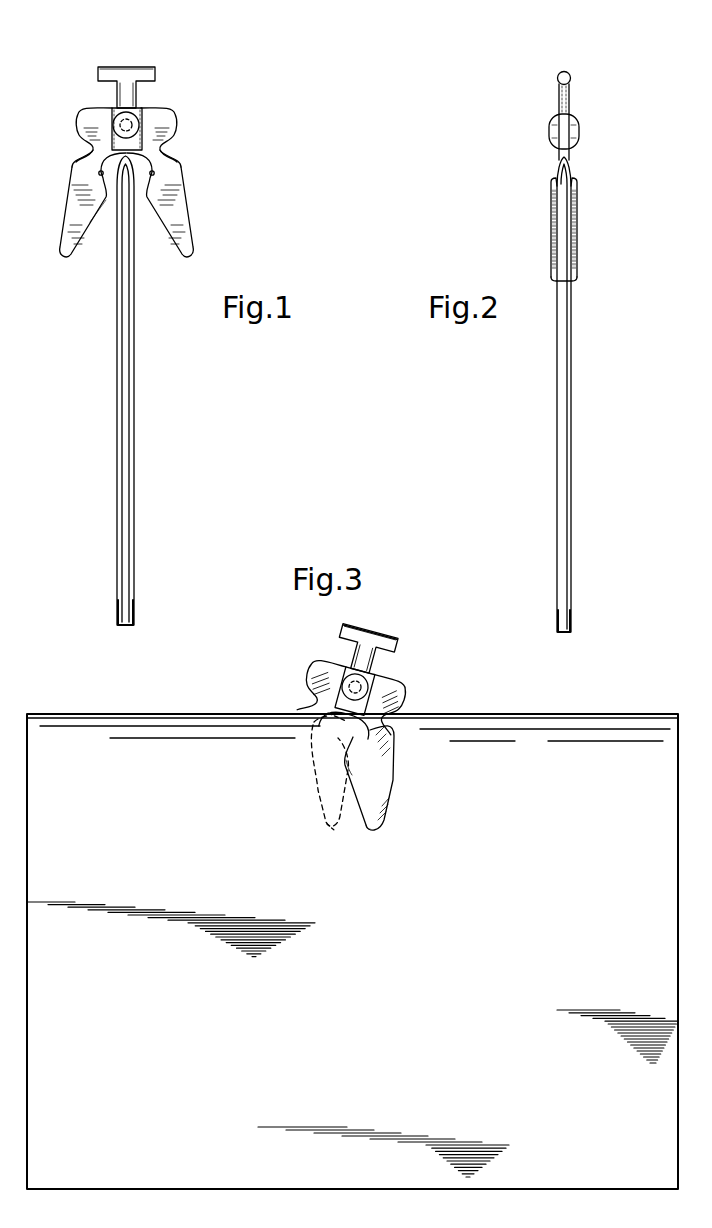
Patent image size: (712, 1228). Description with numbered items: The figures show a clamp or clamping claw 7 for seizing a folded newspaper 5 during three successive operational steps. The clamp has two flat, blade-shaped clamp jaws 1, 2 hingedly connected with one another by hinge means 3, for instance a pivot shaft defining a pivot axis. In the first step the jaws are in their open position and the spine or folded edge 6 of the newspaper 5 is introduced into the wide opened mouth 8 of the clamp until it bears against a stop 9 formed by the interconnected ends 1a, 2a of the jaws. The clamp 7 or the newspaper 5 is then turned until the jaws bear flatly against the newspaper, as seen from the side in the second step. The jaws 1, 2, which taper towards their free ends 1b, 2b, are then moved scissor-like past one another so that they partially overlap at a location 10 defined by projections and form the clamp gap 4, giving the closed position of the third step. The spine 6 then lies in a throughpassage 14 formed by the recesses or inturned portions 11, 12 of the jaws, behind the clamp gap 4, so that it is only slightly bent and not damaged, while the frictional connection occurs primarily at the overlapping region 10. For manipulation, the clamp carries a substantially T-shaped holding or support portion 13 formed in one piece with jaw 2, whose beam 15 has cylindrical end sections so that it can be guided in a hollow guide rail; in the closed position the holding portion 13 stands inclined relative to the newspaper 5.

In FIG. 1, the clamp jaw 1 is at (62, 242).
In FIG. 2, the clamp jaw 1 is at (553, 247).
In FIG. 3, the clamp jaw 1 is at (325, 806).
In FIG. 1, the interconnected end of clamp jaw 1a is at (97, 147).
In FIG. 3, the free end of clamp jaw 1b is at (326, 836).
In FIG. 1, the clamp jaw 2 is at (180, 238).
In FIG. 2, the clamp jaw 2 is at (577, 242).
In FIG. 3, the clamp jaw 2 is at (385, 782).
In FIG. 1, the interconnected end of clamp jaw 2a is at (150, 128).
In FIG. 3, the free end of clamp jaw 2b is at (376, 826).
In FIG. 1, the hinge means 3 is at (129, 123).
In FIG. 2, the hinge means 3 is at (580, 132).
In FIG. 2, the clamp gap 4 is at (565, 220).
In FIG. 3, the clamp gap 4 is at (366, 727).
In FIG. 1, the newspaper 5 is at (133, 362).
In FIG. 2, the newspaper 5 is at (570, 372).
In FIG. 3, the newspaper 5 is at (532, 738).
In FIG. 1, the spine or folded edge 6 is at (163, 152).
In FIG. 1, the clamp or clamping claw 7 is at (70, 137).
In FIG. 3, the clamp or clamping claw 7 is at (318, 671).
In FIG. 1, the mouth of the clamp 8 is at (104, 241).
In FIG. 1, the stop 9 is at (110, 120).
In FIG. 3, the overlapping region 10 is at (350, 765).
In FIG. 1, the recess or inturned portion 11 is at (99, 173).
In FIG. 1, the recess or inturned portion 12 is at (154, 173).
In FIG. 1, the T-shaped holding portion 13 is at (129, 64).
In FIG. 2, the T-shaped holding portion 13 is at (578, 97).
In FIG. 3, the T-shaped holding portion 13 is at (396, 634).
In FIG. 3, the throughpassage 14 is at (325, 712).
In FIG. 2, the beam 15 is at (565, 72).
In FIG. 3, the beam 15 is at (350, 628).